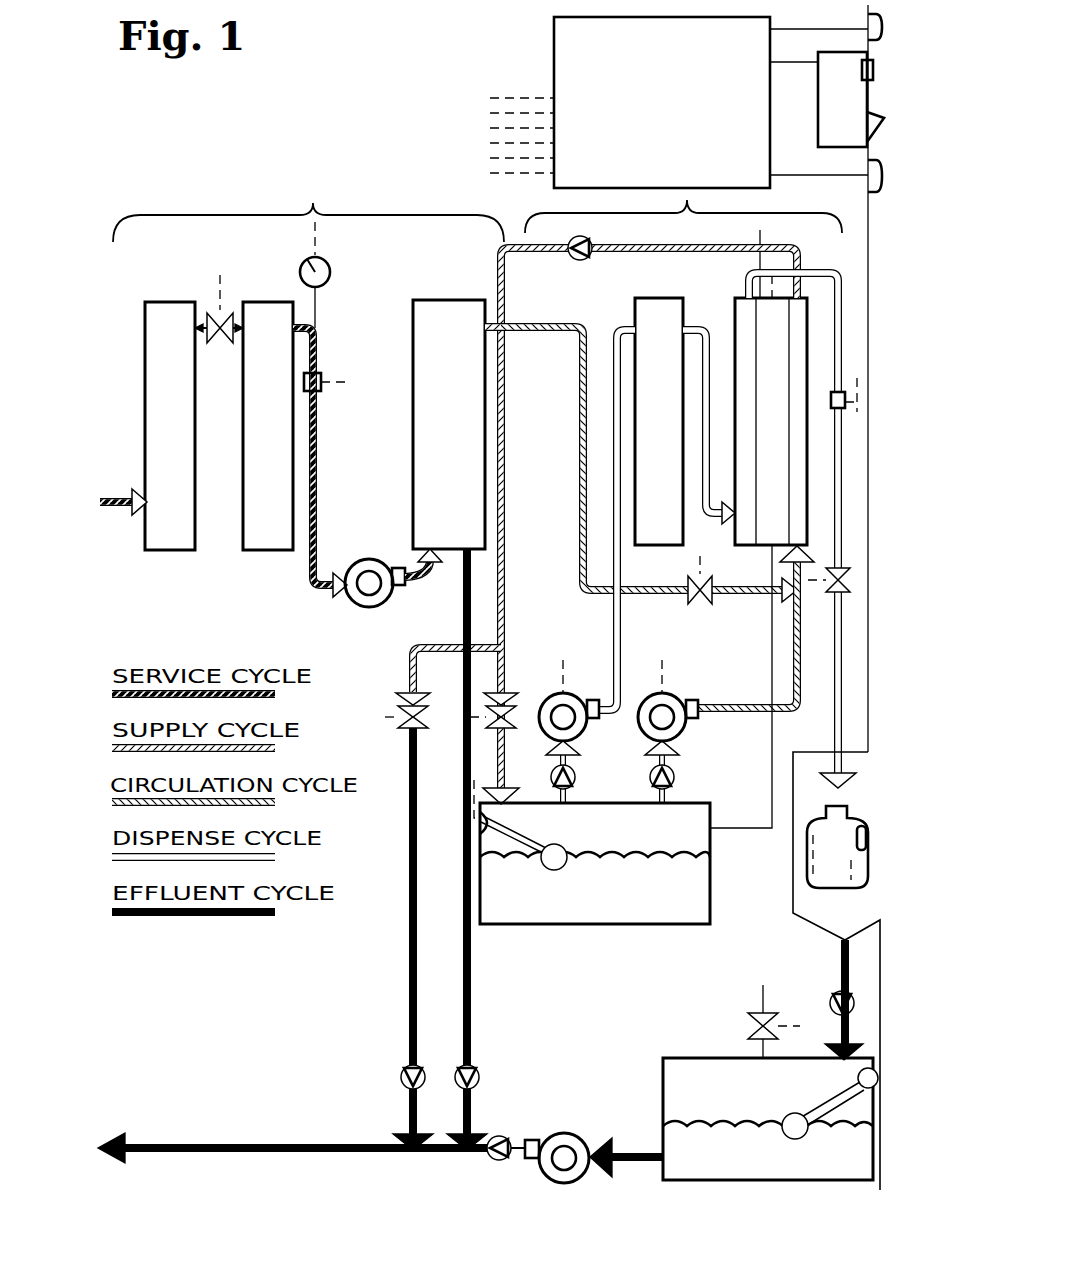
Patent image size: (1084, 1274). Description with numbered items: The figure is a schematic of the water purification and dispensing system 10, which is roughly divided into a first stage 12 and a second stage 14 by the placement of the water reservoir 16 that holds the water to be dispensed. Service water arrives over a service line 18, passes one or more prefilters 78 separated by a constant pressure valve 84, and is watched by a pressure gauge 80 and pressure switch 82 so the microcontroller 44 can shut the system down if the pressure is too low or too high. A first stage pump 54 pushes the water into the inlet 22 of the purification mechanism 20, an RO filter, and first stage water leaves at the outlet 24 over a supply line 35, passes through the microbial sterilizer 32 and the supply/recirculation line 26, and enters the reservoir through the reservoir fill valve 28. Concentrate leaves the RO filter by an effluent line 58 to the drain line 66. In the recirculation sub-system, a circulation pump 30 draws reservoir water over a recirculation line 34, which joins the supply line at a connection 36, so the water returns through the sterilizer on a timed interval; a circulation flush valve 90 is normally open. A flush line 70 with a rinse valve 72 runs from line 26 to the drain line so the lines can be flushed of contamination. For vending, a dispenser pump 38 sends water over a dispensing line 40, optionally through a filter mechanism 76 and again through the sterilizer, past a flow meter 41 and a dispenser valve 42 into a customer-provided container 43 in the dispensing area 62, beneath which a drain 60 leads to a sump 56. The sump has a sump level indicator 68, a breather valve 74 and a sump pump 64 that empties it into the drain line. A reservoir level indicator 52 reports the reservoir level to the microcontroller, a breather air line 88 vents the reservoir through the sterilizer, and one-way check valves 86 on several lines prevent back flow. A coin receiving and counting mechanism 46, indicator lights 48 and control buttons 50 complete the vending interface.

The water purification and dispensing system 10 is at (375, 80).
The first stage 12 is at (308, 218).
The second stage 14 is at (683, 212).
The water reservoir 16 is at (666, 921).
The service line 18 is at (137, 506).
The purification mechanism 20 is at (437, 429).
The inlet 22 is at (420, 558).
The outlet 24 is at (496, 300).
The supply/recirculation line 26 is at (662, 255).
The reservoir fill valve 28 is at (506, 730).
The circulation pump 30 is at (678, 700).
The microbial sterilizer 32 is at (760, 419).
The recirculation line 34 is at (805, 712).
The supply line 35 is at (552, 322).
The connection 36 is at (800, 588).
The dispenser pump 38 is at (546, 700).
The dispensing line 40 is at (745, 280).
The flow meter 41 is at (834, 410).
The dispenser valve 42 is at (846, 590).
The customer-provided container 43 is at (822, 866).
The microcontroller 44 is at (648, 112).
The coin receiving and counting mechanism 46 is at (828, 104).
The indicator lights 48 is at (859, 376).
The control buttons 50 is at (868, 200).
The reservoir level indicator 52 is at (562, 850).
The first stage pump 54 is at (360, 563).
The sump 56 is at (834, 1169).
The effluent line 58 is at (472, 1032).
The drain 60 is at (840, 958).
The dispensing area 62 is at (850, 806).
The sump pump 64 is at (548, 1132).
The drain line 66 is at (234, 1142).
The sump level indicator 68 is at (786, 1118).
The flush line 70 is at (412, 647).
The rinse valve 72 is at (406, 725).
The breather valve 74 is at (748, 1028).
The filter mechanism 76 is at (647, 424).
The prefilters 78 is at (158, 429).
The pressure gauge 80 is at (330, 268).
The pressure switch 82 is at (321, 376).
The constant pressure valve 84 is at (222, 340).
The one-way check valves 86 is at (570, 256).
The breather air line 88 is at (768, 836).
The circulation flush valve 90 is at (694, 600).